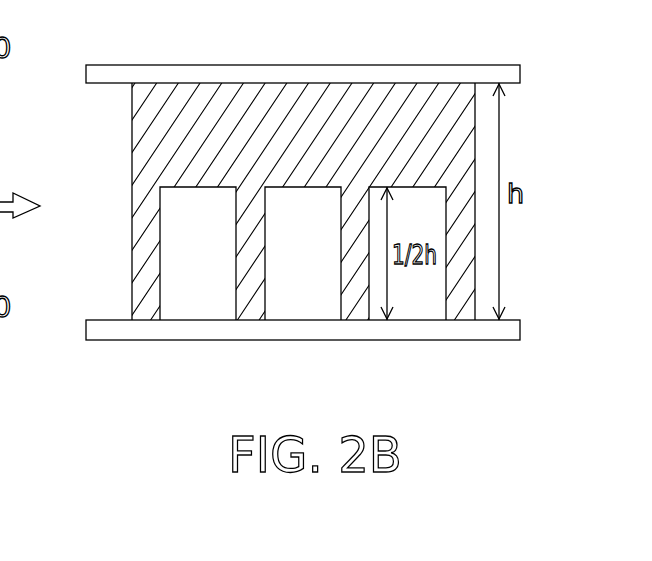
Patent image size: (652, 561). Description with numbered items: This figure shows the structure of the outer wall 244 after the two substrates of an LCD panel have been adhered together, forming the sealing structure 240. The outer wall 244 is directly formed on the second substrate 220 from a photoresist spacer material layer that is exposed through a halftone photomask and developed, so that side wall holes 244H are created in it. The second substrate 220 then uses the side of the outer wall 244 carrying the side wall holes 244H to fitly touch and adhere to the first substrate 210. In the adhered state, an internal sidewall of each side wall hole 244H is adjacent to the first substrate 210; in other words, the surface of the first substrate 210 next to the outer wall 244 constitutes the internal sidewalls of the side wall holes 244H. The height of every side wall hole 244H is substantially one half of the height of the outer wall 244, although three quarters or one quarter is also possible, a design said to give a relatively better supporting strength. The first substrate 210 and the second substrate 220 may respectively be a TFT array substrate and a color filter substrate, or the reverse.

The first substrate 210 is at (517, 331).
The second substrate 220 is at (517, 74).
The sealing structure 240 is at (306, 201).
The outer wall 244 is at (467, 133).
The side wall holes 244H is at (198, 190).